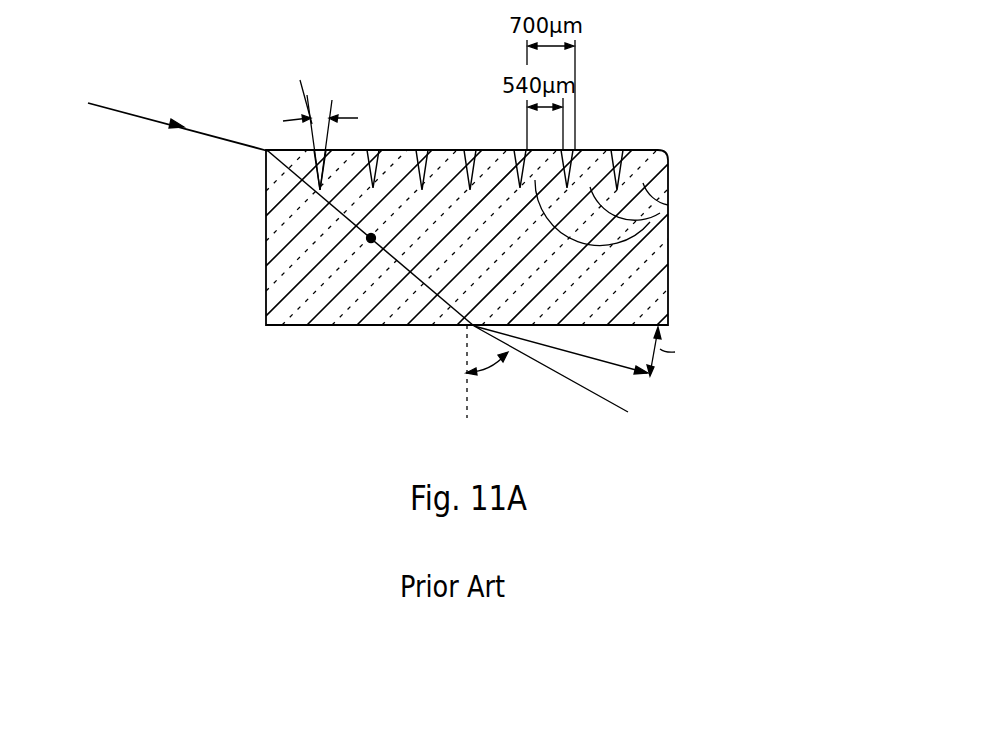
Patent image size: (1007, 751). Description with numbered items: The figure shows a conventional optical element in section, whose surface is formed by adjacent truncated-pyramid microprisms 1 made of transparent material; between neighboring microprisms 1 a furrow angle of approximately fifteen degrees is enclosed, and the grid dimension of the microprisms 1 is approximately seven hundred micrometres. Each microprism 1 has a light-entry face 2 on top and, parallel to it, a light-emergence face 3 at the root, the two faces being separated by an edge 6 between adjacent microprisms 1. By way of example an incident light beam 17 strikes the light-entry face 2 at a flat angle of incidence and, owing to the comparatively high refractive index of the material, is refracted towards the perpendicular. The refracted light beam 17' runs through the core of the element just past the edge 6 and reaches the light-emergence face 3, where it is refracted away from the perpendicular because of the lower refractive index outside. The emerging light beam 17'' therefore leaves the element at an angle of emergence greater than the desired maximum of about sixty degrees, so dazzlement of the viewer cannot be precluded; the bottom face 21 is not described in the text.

The microprism 1 is at (283, 184).
The light-entry face 2 is at (493, 148).
The light-emergence face 3 is at (630, 247).
The edge between adjacent microprisms 6 is at (373, 152).
The incident light beam 17 is at (178, 139).
The refracted light beam 17' is at (371, 238).
The emerging light beam 17'' is at (578, 371).
The exit surface 21 is at (346, 327).